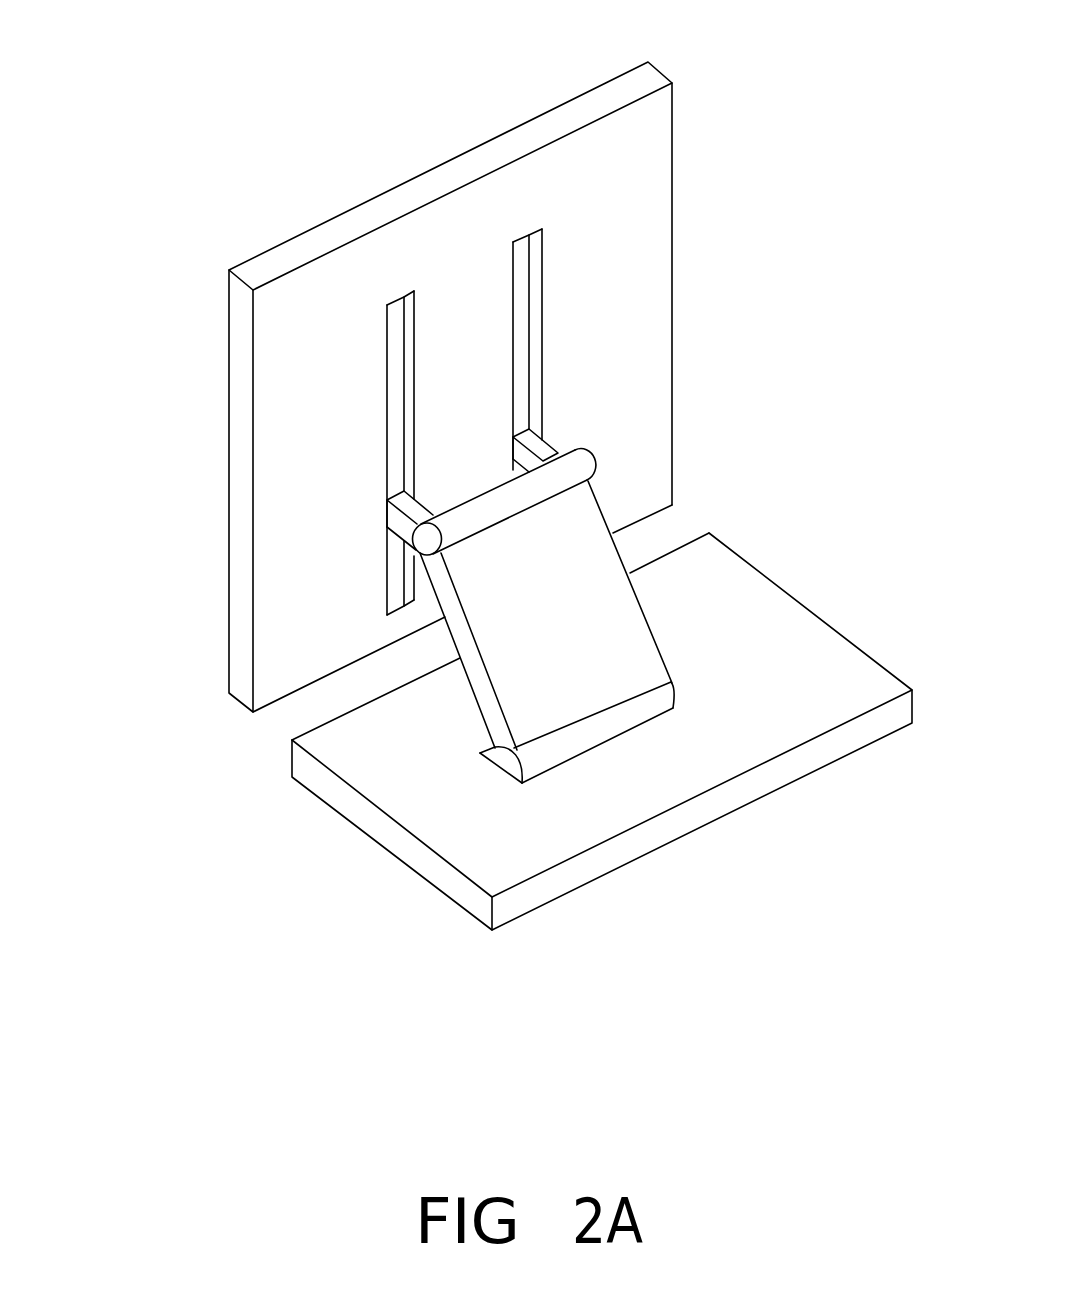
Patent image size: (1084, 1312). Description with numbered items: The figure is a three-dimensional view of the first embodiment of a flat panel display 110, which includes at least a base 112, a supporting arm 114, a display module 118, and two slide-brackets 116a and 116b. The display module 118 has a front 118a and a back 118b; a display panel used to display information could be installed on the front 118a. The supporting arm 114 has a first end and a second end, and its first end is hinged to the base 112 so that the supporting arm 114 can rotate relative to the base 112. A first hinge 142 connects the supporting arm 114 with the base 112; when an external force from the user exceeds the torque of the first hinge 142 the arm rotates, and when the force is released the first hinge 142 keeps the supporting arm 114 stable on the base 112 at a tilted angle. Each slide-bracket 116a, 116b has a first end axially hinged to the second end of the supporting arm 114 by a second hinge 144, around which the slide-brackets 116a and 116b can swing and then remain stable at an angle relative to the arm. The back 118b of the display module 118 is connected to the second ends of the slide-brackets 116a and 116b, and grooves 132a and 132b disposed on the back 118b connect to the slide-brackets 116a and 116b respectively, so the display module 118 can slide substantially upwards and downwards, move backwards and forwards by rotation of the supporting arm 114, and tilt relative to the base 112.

The flat panel display 110 is at (888, 65).
The base 112 is at (778, 775).
The supporting arm 114 is at (623, 628).
The slide-bracket 116a is at (403, 525).
The slide-bracket 116b is at (557, 447).
The display module 118 is at (453, 387).
The front 118a is at (228, 480).
The back 118b is at (632, 363).
The groove 132a is at (398, 362).
The groove 132b is at (525, 300).
The first hinge 142 is at (505, 767).
The second hinge 144 is at (430, 540).